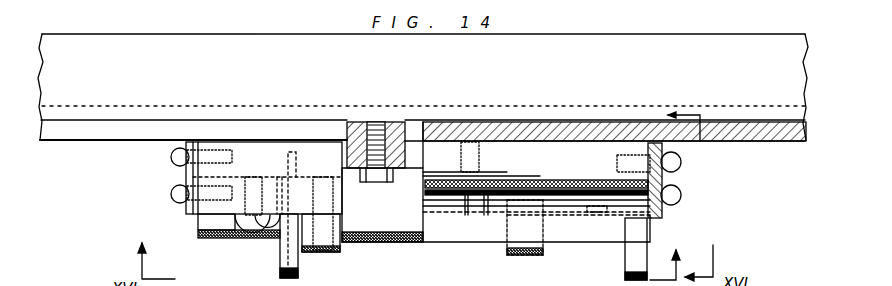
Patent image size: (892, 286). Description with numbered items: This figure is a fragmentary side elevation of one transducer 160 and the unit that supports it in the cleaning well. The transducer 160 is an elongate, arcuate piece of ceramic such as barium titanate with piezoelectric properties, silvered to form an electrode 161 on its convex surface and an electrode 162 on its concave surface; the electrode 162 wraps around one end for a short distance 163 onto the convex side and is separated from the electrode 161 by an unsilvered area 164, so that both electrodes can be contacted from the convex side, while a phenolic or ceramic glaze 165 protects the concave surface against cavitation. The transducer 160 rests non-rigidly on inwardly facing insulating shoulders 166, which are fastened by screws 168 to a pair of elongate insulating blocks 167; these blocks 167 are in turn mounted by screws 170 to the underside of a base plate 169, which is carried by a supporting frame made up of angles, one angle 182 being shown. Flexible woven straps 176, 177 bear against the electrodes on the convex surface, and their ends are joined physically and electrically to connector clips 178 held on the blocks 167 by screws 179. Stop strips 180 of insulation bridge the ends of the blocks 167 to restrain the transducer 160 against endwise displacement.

The angle 182 is at (630, 52).
The base plate 169 is at (125, 140).
The stop strips 180 is at (186, 176).
The flexible woven strap 176 is at (264, 203).
The insulating blocks 167 is at (210, 208).
The screws 179 is at (600, 258).
The connector clips 178 is at (263, 232).
The screws 168 is at (463, 240).
The screws 170 is at (458, 175).
The shoulders 166 is at (340, 242).
The transducer 160 is at (487, 242).
The electrode 161 is at (557, 169).
The electrode 162 is at (470, 202).
The glaze 165 is at (490, 206).
The short distance 163 is at (618, 160).
The unsilvered area 164 is at (617, 174).
The flexible woven strap 177 is at (665, 175).